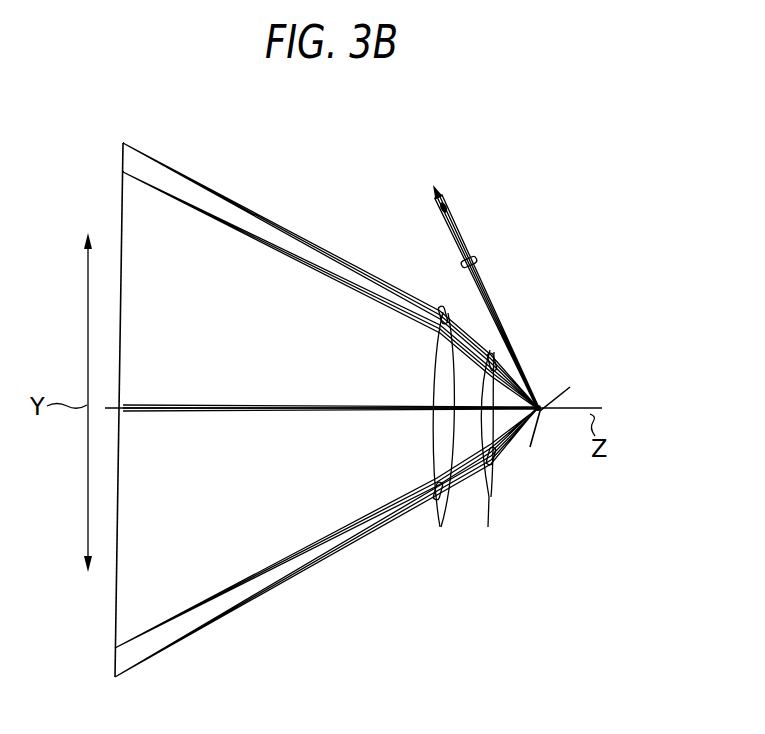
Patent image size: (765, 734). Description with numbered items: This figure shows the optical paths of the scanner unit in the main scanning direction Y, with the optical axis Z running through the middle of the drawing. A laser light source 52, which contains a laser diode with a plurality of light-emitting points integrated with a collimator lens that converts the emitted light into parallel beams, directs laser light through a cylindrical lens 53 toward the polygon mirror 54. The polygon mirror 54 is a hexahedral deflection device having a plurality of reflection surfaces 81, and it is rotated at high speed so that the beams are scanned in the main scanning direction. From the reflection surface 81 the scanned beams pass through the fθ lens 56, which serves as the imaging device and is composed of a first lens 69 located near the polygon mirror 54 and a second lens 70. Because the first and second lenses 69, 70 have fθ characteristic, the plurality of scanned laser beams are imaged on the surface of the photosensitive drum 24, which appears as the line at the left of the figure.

The photosensitive drum 24 is at (125, 278).
The laser light source 52 is at (446, 206).
The cylindrical lens 53 is at (473, 260).
The polygon mirror 54 is at (547, 423).
The fθ lens 56 is at (465, 456).
The first lens 69 is at (492, 456).
The second lens 70 is at (444, 434).
The reflection surface 81 is at (551, 396).